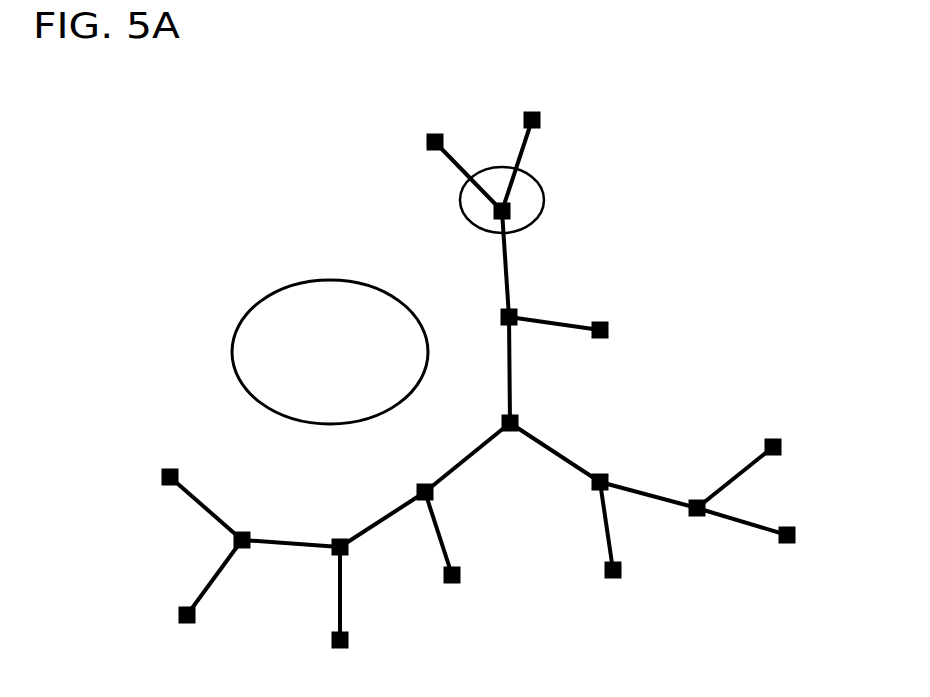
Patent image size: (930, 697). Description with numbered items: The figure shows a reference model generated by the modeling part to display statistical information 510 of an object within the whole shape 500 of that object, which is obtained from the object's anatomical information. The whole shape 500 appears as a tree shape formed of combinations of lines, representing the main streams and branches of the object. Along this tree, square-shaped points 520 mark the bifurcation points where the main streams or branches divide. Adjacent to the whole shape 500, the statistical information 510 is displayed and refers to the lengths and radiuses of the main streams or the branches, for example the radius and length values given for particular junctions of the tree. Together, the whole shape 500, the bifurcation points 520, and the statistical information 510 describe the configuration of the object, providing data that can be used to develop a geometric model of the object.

The whole shape of the object 500 is at (557, 453).
The statistical information 510 is at (325, 280).
The square-shaped points 520 is at (500, 167).